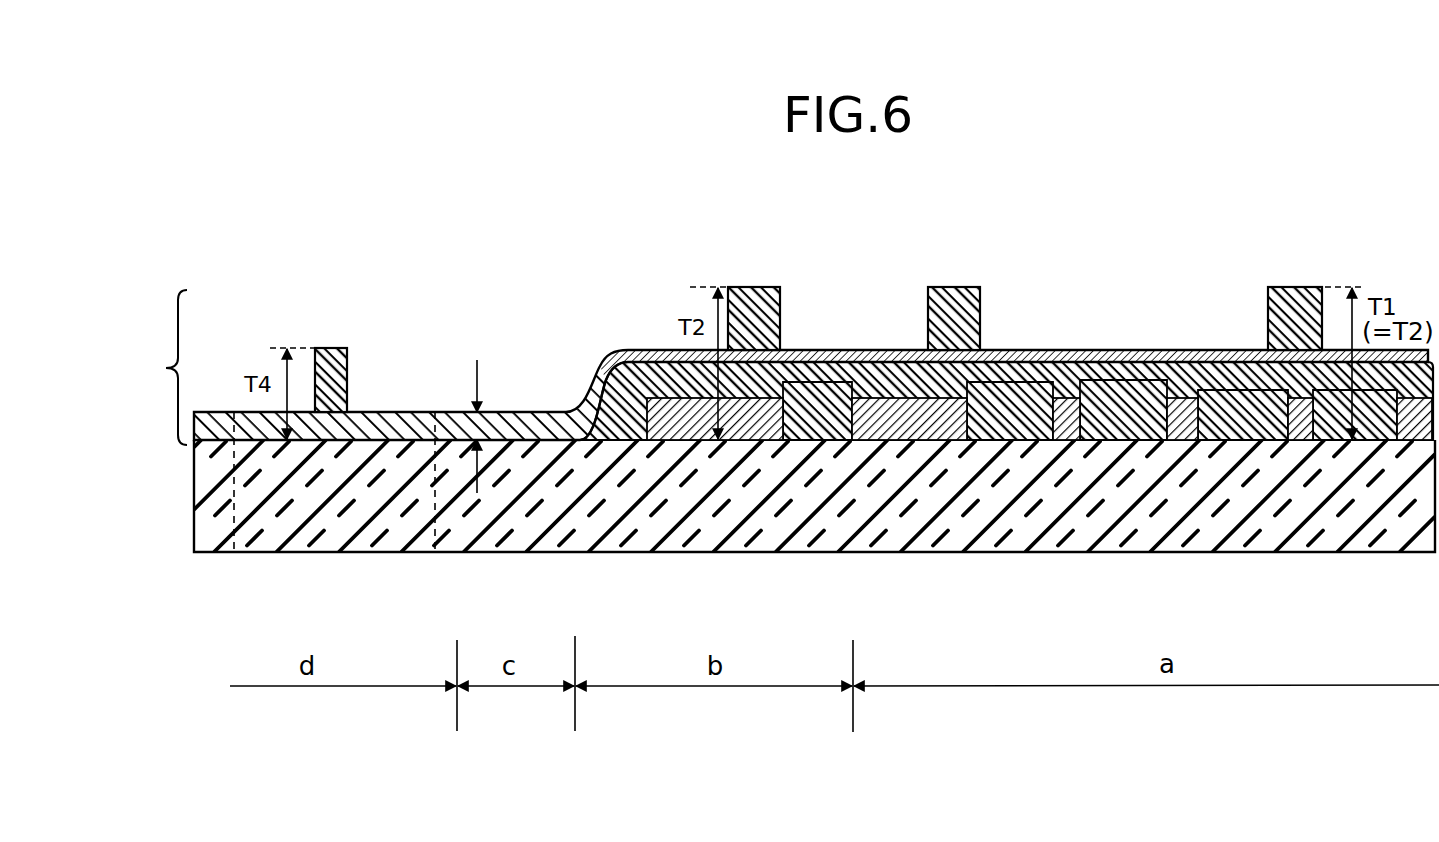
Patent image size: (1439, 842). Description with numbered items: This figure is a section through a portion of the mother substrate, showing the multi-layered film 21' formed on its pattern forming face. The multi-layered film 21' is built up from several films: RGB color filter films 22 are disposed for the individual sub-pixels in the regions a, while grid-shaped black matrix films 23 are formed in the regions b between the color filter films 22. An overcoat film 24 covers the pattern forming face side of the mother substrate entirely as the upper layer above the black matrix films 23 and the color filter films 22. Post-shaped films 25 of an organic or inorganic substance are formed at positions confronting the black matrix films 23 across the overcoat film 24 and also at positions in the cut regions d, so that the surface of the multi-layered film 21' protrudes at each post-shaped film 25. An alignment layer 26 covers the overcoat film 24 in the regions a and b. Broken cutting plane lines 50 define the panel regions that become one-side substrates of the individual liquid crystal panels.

The multi-layered film 21' is at (149, 367).
The RGB color filter film 22 is at (873, 386).
The black matrix film 23 is at (955, 425).
The overcoat film 24 is at (506, 426).
The post-shaped film 25 is at (325, 348).
The alignment layer 26 is at (433, 412).
The cutting plane line 50 is at (234, 554).